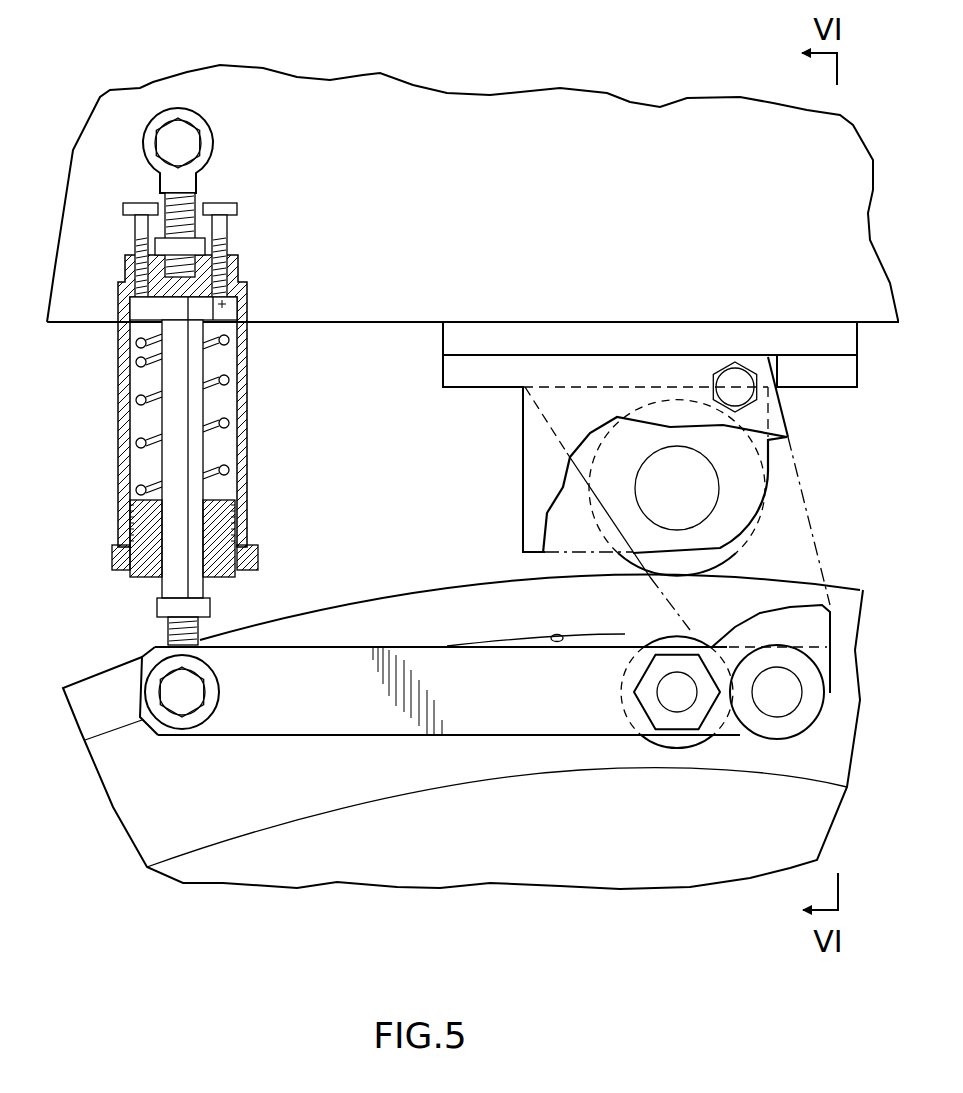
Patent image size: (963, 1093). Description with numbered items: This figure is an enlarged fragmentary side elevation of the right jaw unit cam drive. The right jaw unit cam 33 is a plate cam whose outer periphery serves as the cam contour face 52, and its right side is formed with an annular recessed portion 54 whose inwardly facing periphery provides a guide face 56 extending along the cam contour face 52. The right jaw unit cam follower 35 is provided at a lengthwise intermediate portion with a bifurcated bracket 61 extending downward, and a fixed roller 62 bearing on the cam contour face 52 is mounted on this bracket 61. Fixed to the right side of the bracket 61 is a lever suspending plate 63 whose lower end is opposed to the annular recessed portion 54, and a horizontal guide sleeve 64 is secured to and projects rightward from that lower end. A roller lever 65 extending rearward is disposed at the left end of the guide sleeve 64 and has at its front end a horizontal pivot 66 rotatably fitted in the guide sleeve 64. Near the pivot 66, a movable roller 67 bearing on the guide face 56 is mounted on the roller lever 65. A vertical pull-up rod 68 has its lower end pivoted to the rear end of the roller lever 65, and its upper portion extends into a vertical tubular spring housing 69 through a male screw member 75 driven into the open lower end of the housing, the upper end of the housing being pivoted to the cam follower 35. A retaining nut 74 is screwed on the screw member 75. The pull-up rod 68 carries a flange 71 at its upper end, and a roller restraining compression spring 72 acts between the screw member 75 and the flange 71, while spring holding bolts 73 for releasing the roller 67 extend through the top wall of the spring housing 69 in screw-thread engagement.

The right jaw unit cam 33 is at (337, 601).
The right jaw unit cam follower 35 is at (380, 292).
The cam contour face 52 is at (417, 590).
The annular recessed portion 54 is at (337, 772).
The guide face 56 is at (547, 635).
The bifurcated bracket 61 is at (732, 477).
The fixed roller 62 is at (753, 527).
The lever suspending plate 63 is at (820, 628).
The horizontal guide sleeve 64 is at (760, 723).
The roller lever 65 is at (488, 710).
The horizontal pivot 66 is at (782, 697).
The movable roller 67 is at (673, 750).
The vertical pull-up rod 68 is at (167, 587).
The vertical tubular spring housing 69 is at (240, 407).
The flange 71 is at (222, 325).
The roller restraining compression spring 72 is at (235, 470).
The spring holding bolts 73 is at (227, 227).
The retaining nut 74 is at (112, 553).
The male screw member 75 is at (130, 510).